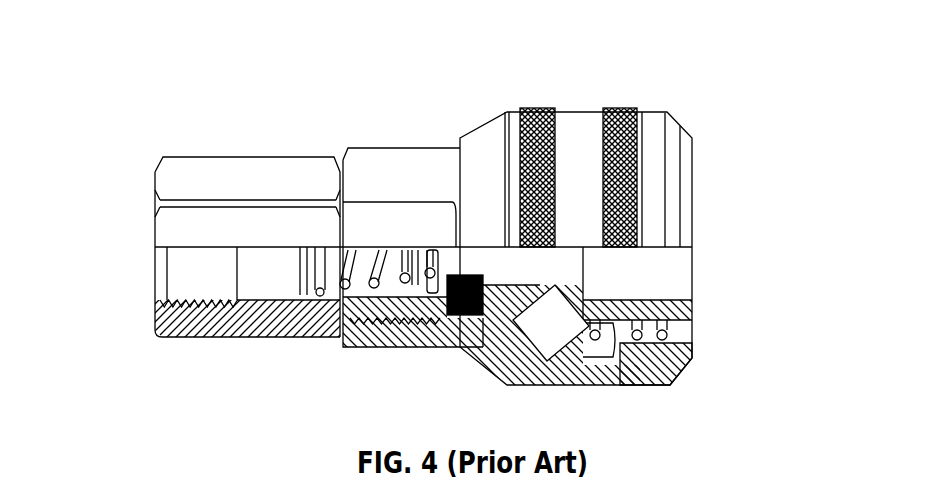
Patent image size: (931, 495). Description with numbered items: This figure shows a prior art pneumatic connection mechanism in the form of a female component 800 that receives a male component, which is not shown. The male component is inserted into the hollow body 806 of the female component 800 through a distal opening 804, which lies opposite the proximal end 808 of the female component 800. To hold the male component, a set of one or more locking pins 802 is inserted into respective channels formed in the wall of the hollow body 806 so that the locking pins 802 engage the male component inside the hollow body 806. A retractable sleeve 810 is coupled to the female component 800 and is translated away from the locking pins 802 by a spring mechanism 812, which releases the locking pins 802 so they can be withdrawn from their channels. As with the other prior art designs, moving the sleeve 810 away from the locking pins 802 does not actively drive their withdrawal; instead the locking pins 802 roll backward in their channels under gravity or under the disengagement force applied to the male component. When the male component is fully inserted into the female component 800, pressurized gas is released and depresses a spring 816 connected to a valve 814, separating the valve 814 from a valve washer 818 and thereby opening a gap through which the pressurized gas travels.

The female component 800 is at (173, 77).
The locking pins 802 is at (565, 300).
The distal opening 804 is at (705, 273).
The hollow body 806 is at (387, 148).
The proximal end 808 is at (312, 157).
The retractable sleeve 810 is at (578, 112).
The spring mechanism 812 is at (637, 337).
The valve 814 is at (440, 290).
The spring 816 is at (360, 272).
The valve washer 818 is at (484, 280).